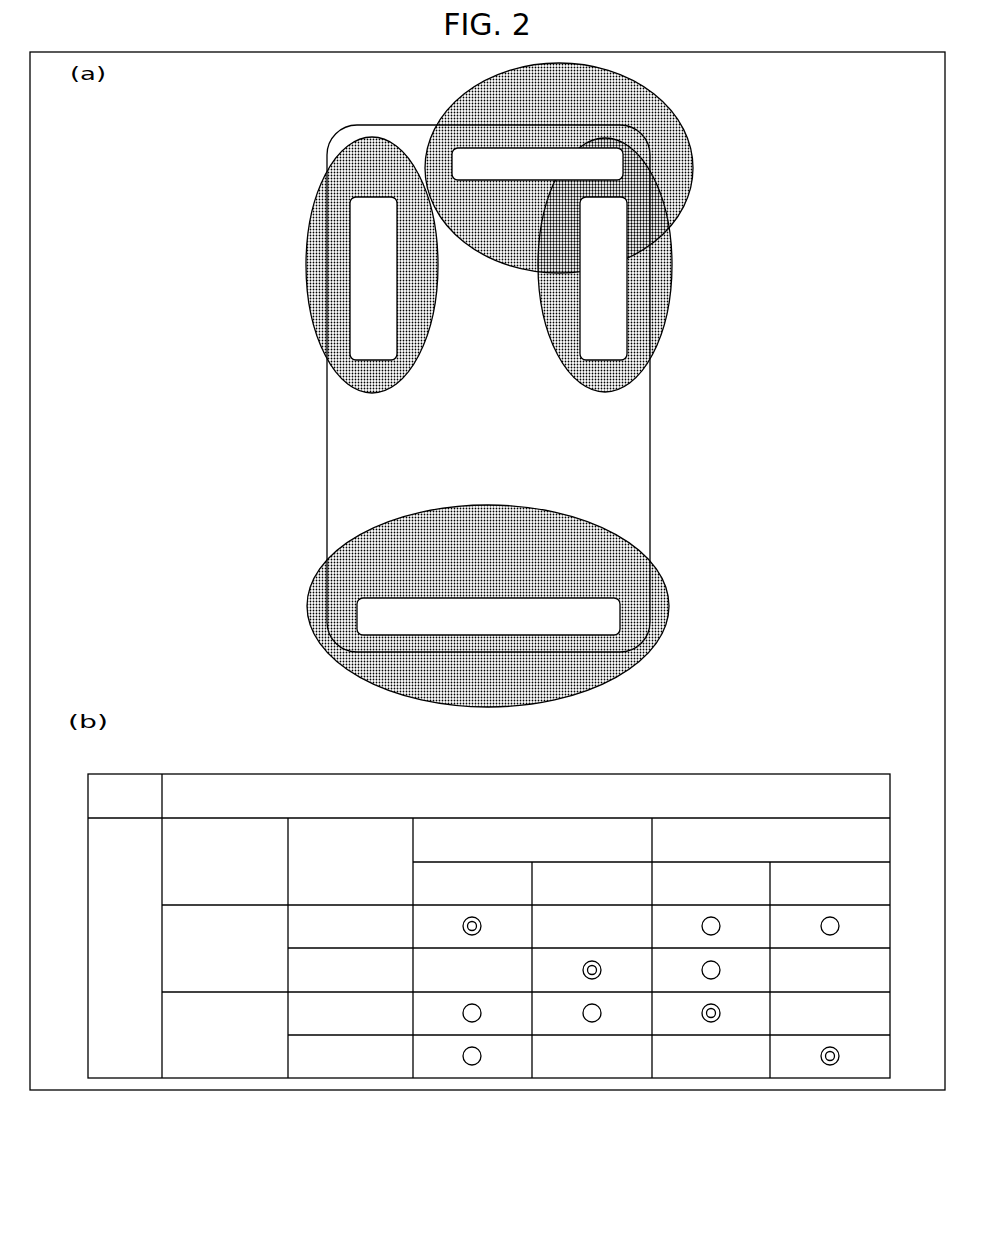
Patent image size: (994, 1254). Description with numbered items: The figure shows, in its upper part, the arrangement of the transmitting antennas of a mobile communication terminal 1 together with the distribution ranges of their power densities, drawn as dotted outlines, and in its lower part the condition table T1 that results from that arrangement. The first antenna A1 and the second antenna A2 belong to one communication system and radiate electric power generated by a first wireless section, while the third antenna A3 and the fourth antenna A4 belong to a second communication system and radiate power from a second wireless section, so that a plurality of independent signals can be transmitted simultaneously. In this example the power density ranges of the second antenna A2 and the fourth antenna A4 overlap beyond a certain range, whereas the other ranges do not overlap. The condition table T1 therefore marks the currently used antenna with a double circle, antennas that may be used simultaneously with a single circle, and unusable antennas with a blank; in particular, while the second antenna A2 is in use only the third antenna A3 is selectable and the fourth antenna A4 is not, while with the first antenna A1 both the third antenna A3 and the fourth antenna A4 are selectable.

The mobile communication terminal 1 is at (400, 127).
The first antenna A1 is at (488, 617).
The second antenna A2 is at (537, 167).
The third antenna A3 is at (373, 278).
The fourth antenna A4 is at (603, 278).
The condition table T1 is at (489, 908).